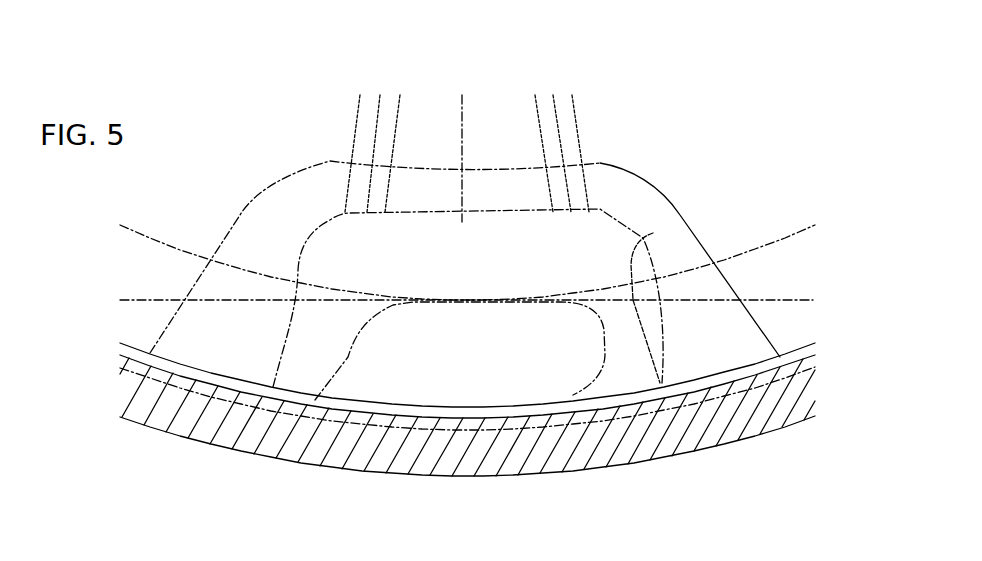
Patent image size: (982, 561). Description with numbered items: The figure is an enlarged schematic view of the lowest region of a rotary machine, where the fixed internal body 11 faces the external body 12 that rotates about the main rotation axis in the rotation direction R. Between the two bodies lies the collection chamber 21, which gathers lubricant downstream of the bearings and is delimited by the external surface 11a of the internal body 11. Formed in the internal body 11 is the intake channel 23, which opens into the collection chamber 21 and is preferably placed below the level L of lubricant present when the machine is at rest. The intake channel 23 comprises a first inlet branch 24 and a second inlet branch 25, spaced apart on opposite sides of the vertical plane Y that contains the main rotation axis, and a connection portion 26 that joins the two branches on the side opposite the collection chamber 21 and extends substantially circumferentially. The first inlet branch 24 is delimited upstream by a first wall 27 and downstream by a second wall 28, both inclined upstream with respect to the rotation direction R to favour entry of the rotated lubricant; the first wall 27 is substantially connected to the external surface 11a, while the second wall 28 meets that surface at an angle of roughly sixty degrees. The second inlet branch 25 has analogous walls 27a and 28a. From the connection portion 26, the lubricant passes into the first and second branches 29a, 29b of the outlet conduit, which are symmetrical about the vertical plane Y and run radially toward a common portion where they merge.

The internal body 11 is at (698, 358).
The external surface of the internal body 11a is at (173, 360).
The external body 12 is at (769, 428).
The collection chamber 21 is at (780, 355).
The intake channel 23 is at (330, 230).
The first inlet branch 24 is at (283, 390).
The second inlet branch 25 is at (612, 396).
The connection portion 26 is at (520, 275).
The first wall 27 is at (258, 373).
The first wall of the second inlet branch 27a is at (594, 379).
The second wall 28 is at (339, 384).
The second wall of the second inlet branch 28a is at (653, 233).
The first branch of the outlet conduit 29a is at (377, 128).
The second branch of the outlet conduit 29b is at (560, 117).
The vertical plane Y is at (462, 118).
The level of lubricant L is at (218, 298).
The rotation direction R is at (310, 490).